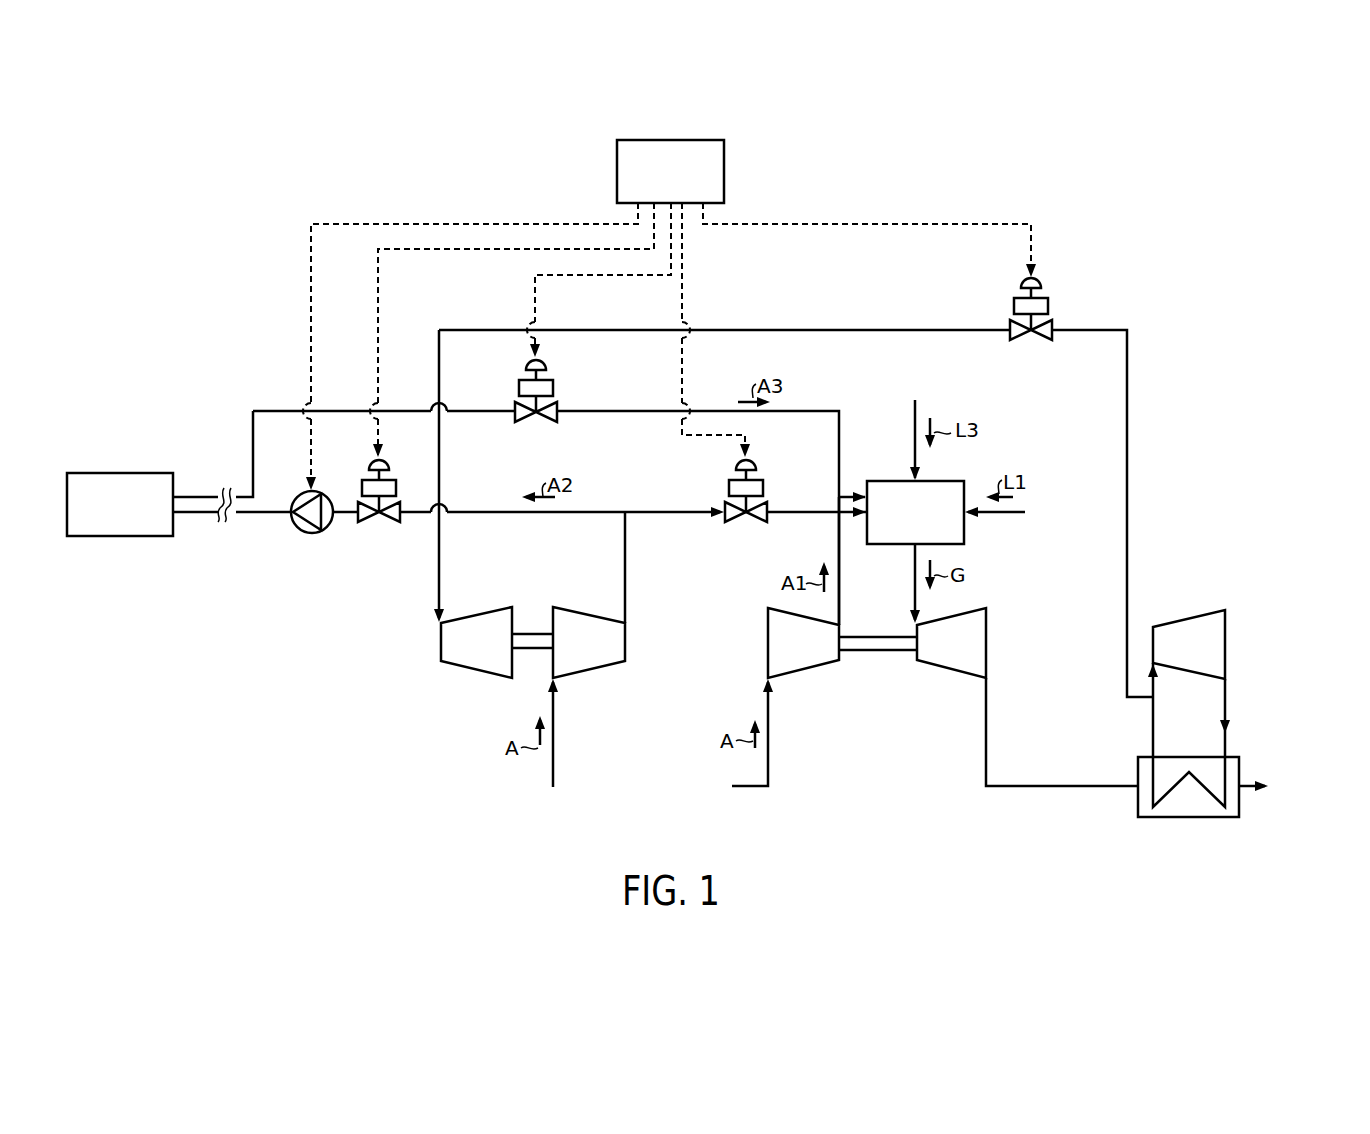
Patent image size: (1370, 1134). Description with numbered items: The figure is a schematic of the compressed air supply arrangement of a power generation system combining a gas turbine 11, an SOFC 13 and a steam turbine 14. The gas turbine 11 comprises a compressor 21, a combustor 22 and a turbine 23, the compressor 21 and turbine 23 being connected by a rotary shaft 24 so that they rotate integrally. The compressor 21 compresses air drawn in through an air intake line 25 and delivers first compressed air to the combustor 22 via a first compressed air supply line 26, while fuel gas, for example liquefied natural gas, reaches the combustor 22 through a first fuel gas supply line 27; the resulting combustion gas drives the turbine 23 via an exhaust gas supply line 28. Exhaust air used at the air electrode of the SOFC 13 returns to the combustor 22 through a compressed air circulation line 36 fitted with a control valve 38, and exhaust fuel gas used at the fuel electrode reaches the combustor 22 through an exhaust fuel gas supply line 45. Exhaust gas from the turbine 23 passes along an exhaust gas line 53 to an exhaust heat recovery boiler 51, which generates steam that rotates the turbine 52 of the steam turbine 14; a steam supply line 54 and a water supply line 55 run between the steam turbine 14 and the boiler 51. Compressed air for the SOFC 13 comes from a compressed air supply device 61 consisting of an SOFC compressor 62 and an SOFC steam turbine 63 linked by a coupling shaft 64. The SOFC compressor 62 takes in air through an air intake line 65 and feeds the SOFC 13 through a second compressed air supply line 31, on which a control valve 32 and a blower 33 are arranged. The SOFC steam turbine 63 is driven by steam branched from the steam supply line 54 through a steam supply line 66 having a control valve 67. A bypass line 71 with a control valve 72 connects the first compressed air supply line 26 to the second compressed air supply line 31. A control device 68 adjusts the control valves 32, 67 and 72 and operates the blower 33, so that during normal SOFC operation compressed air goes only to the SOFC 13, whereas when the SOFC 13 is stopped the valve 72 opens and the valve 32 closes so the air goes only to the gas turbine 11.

The gas turbine 11 is at (1004, 628).
The SOFC 13 is at (79, 473).
The steam turbine 14 is at (1232, 700).
The compressor 21 is at (812, 668).
The combustor 22 is at (935, 481).
The turbine 23 is at (944, 672).
The rotary shaft 24 is at (872, 652).
The air intake line 25 is at (770, 760).
The first compressed air supply line 26 is at (841, 592).
The first fuel gas supply line 27 is at (985, 516).
The exhaust gas supply line 28 is at (915, 563).
The second compressed air supply line 31 is at (485, 510).
The control valve 32 is at (389, 464).
The blower 33 is at (298, 494).
The compressed air circulation line 36 is at (618, 411).
The control valve 38 is at (547, 369).
The exhaust fuel gas supply line 45 is at (887, 421).
The exhaust heat recovery boiler 51 is at (1189, 818).
The turbine 52 is at (1188, 618).
The exhaust gas line 53 is at (1040, 788).
The steam supply line 54 is at (1150, 724).
The water supply line 55 is at (1228, 702).
The compressed air supply device 61 is at (516, 703).
The SOFC compressor 62 is at (604, 668).
The SOFC steam turbine 63 is at (462, 664).
The coupling shaft 64 is at (532, 650).
The air intake line 65 is at (556, 755).
The steam supply line 66 is at (854, 323).
The control valve 67 is at (1042, 278).
The control device 68 is at (691, 140).
The bypass line 71 is at (671, 510).
The control valve 72 is at (757, 464).